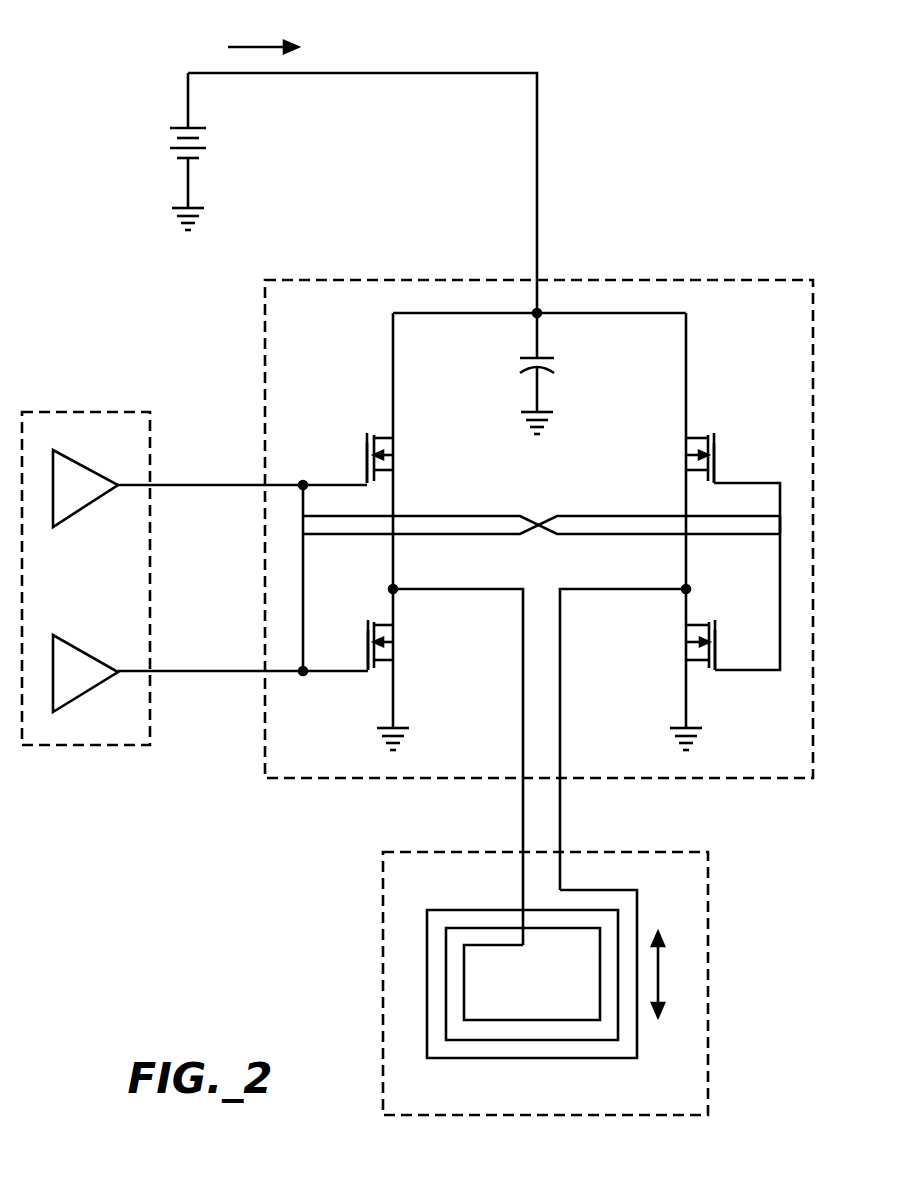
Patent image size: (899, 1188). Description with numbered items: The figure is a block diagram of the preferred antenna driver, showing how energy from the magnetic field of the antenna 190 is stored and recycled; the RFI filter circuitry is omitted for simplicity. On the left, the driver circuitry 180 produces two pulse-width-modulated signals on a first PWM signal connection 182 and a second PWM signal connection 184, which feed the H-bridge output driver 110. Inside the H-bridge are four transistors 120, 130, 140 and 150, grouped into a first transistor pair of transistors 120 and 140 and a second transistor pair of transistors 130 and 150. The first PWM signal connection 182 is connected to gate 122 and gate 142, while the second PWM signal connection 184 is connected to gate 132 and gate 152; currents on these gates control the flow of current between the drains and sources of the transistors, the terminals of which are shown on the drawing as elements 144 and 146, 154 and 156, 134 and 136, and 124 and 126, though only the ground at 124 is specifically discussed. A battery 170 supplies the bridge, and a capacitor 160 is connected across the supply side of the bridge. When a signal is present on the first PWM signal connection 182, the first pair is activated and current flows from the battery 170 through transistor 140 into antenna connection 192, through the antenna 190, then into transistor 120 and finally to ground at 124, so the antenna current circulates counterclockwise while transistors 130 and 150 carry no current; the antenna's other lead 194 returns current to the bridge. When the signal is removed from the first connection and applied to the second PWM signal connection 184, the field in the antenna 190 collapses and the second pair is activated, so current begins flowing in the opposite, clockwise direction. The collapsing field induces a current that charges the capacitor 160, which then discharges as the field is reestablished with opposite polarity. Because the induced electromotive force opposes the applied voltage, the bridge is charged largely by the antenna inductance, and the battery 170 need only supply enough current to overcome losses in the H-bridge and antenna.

The battery 170 is at (178, 127).
The H-bridge output driver 110 is at (679, 278).
The capacitor 160 is at (548, 357).
The transistor 140 is at (367, 440).
The gate 142 is at (365, 482).
The source of transistor 140 144 is at (398, 472).
The drain of transistor 140 146 is at (396, 437).
The transistor 150 is at (712, 437).
The gate 152 is at (714, 480).
The source of transistor 150 154 is at (683, 474).
The drain of transistor 150 156 is at (683, 438).
The transistor 130 is at (366, 633).
The gate 132 is at (366, 672).
The source of transistor 130 134 is at (398, 660).
The drain of transistor 130 136 is at (398, 625).
The transistor 120 is at (716, 632).
The gate 122 is at (716, 670).
The ground 124 is at (684, 660).
The drain of transistor 120 126 is at (684, 625).
The driver circuitry 180 is at (110, 410).
The first PWM signal connection 182 is at (150, 485).
The second PWM signal connection 184 is at (150, 671).
The antenna 190 is at (680, 850).
The antenna connection 192 is at (524, 882).
The second coil lead 194 is at (562, 868).